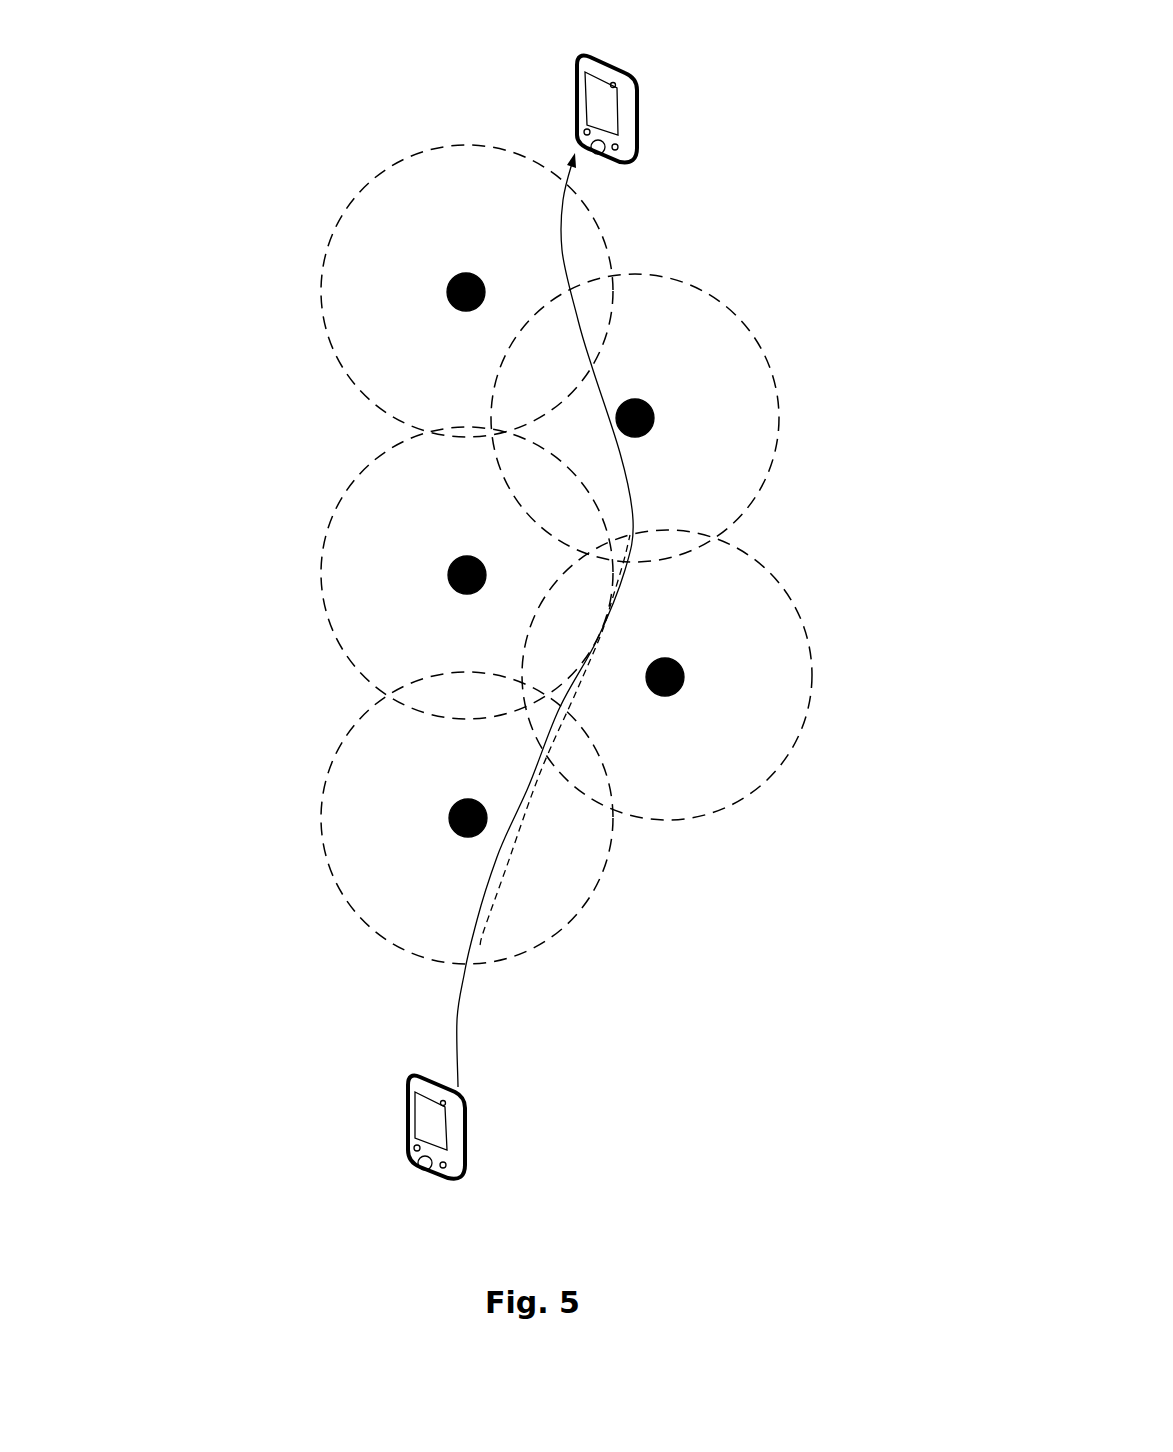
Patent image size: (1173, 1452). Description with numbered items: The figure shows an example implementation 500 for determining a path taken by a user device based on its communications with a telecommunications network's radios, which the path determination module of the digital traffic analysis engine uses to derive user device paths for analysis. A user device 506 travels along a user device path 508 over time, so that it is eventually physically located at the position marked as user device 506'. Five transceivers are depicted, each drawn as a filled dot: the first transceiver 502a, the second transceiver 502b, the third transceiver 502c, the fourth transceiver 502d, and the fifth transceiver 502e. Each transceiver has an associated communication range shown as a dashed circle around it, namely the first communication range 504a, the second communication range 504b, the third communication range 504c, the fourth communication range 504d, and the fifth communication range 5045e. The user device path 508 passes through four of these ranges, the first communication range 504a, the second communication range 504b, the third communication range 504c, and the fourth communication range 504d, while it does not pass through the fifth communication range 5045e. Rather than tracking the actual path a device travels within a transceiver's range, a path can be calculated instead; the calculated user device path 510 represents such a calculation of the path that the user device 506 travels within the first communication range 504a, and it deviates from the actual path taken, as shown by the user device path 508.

The implementation 500 is at (132, 72).
The transceiver 1 502a is at (480, 800).
The transceiver 2 502b is at (678, 658).
The transceiver 3 502c is at (645, 402).
The transceiver 4 502d is at (477, 273).
The transceiver 5 502e is at (478, 556).
The transceiver 1 communication range 504a is at (337, 750).
The transceiver 2 communication range 504b is at (753, 797).
The transceiver 3 communication range 504c is at (773, 475).
The transceiver 4 communication range 504d is at (438, 145).
The transceiver 5 communication range 5045e is at (355, 478).
The user device 506 is at (355, 1106).
The user device 506' is at (526, 89).
The user device path 508 is at (463, 992).
The calculated user device path 510 is at (482, 938).